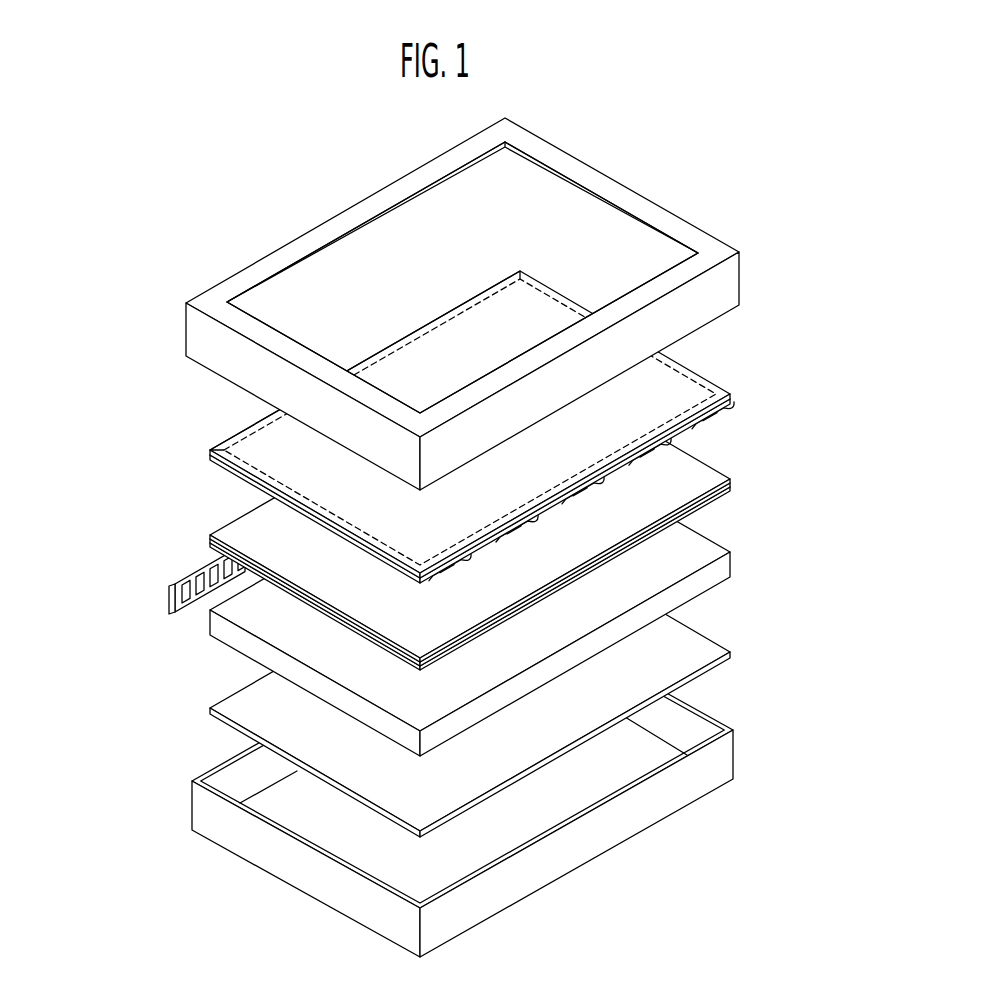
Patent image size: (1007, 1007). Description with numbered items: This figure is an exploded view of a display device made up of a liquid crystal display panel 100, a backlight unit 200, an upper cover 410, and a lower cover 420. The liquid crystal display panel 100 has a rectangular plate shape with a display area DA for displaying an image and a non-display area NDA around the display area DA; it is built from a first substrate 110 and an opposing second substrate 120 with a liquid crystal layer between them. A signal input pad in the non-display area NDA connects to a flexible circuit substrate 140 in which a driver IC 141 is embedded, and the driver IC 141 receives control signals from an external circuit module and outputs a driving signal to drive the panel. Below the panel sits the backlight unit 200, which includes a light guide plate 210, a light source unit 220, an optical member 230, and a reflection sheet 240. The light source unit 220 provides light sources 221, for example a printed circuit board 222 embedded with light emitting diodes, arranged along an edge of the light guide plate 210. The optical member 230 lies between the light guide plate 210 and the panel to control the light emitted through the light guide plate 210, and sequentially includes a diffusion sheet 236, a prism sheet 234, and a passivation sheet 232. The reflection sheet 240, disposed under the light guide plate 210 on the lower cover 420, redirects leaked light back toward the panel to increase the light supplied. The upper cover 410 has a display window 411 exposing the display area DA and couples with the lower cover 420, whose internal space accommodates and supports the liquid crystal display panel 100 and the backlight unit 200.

The liquid crystal display panel 100 is at (433, 427).
The first substrate 110 is at (224, 464).
The second substrate 120 is at (211, 450).
The flexible circuit substrate 140 is at (737, 413).
The driver IC 141 is at (727, 418).
The backlight unit 200 is at (381, 596).
The light guide plate 210 is at (224, 632).
The light source unit 220 is at (159, 587).
The light sources 221 is at (178, 590).
The printed circuit board 222 is at (168, 607).
The optical member 230 is at (400, 513).
The passivation sheet 232 is at (211, 536).
The prism sheet 234 is at (211, 541).
The diffusion sheet 236 is at (211, 546).
The reflection sheet 240 is at (242, 703).
The upper cover 410 is at (423, 304).
The display window 411 is at (396, 255).
The lower cover 420 is at (189, 803).
The display area DA is at (258, 447).
The non-display area NDA is at (248, 427).